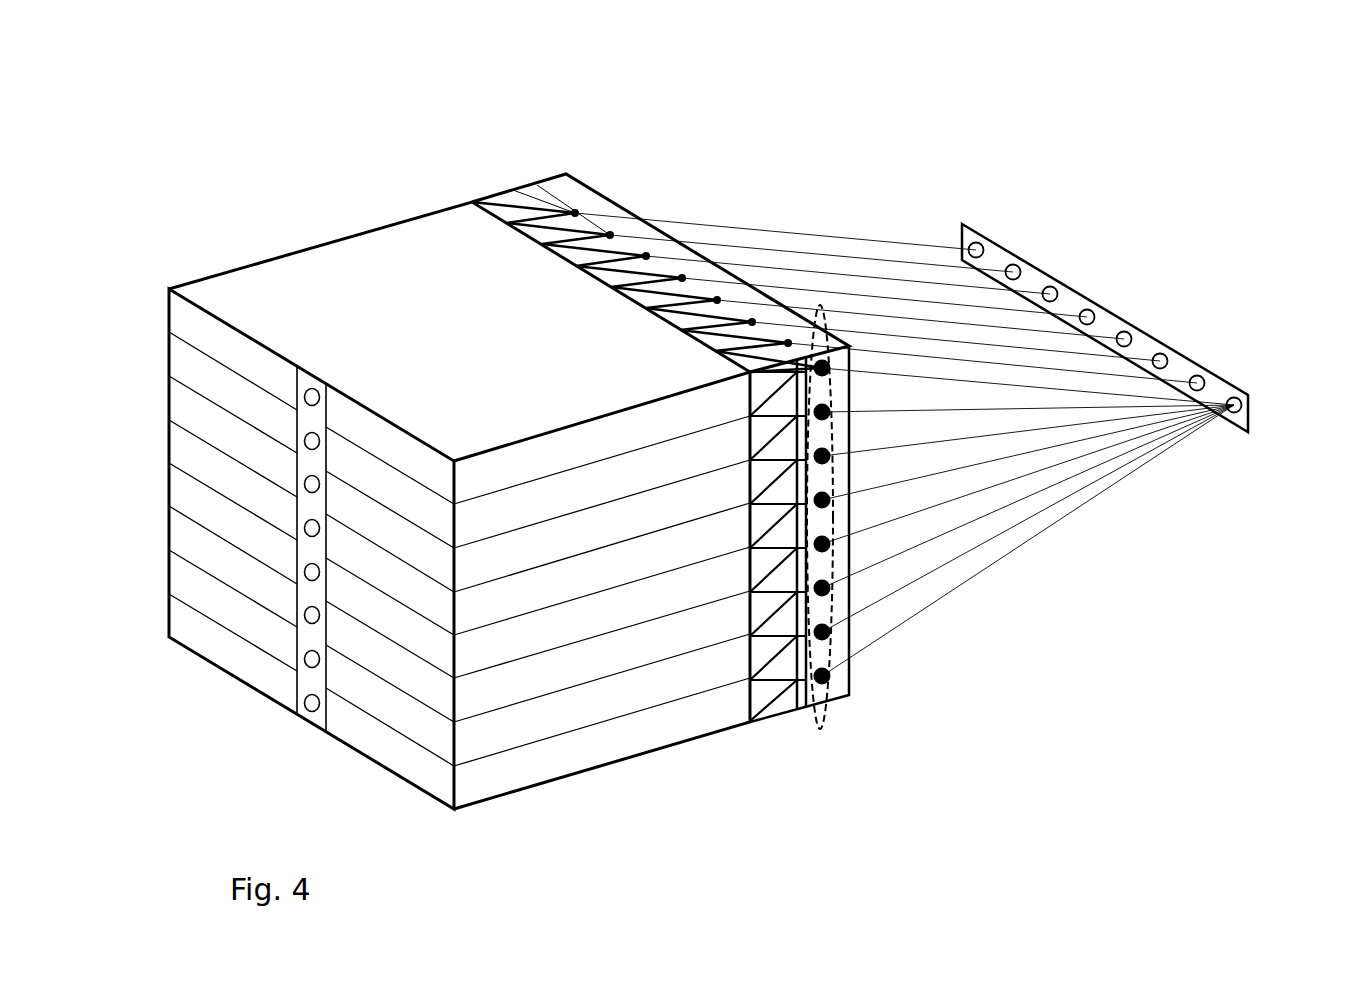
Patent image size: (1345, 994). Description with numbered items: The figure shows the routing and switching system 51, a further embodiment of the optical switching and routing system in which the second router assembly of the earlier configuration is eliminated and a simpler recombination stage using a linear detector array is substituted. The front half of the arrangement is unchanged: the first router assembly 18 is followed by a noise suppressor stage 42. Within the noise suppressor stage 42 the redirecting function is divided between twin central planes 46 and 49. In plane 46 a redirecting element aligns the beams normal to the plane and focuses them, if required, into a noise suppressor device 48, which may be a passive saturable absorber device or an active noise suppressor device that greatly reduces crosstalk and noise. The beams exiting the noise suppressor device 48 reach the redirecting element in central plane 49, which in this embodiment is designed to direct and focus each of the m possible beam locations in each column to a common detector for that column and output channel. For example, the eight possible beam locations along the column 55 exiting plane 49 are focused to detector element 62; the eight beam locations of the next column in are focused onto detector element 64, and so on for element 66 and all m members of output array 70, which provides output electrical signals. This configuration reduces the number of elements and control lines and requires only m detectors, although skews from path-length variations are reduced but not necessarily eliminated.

The first router assembly 18 is at (636, 804).
The routing and switching system 51 is at (282, 118).
The central plane 46 is at (473, 201).
The noise suppressor device 48 is at (523, 187).
The central plane 49 is at (566, 174).
The noise suppressor stage 42 is at (753, 740).
The column 55 is at (832, 654).
The detector element 62 is at (1234, 397).
The detector element 64 is at (1197, 375).
The detector element 66 is at (1161, 353).
The output array 70 is at (1248, 403).